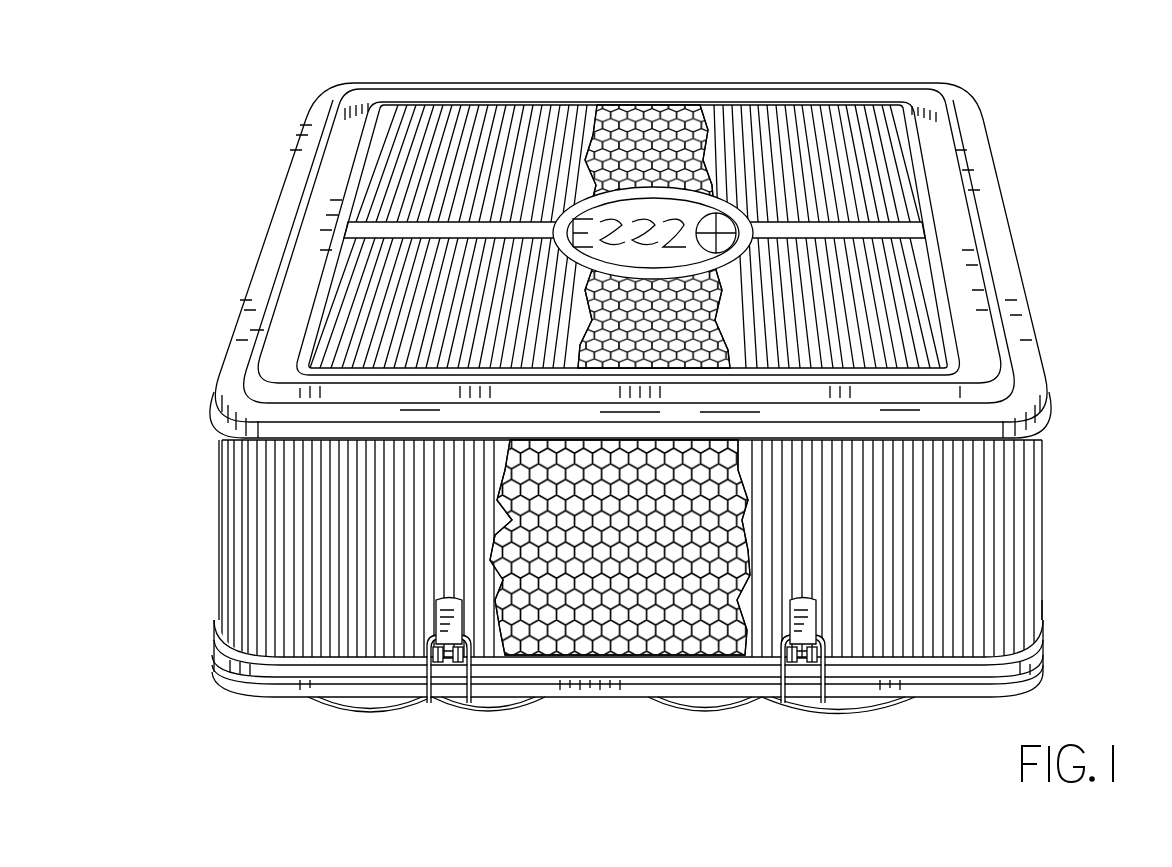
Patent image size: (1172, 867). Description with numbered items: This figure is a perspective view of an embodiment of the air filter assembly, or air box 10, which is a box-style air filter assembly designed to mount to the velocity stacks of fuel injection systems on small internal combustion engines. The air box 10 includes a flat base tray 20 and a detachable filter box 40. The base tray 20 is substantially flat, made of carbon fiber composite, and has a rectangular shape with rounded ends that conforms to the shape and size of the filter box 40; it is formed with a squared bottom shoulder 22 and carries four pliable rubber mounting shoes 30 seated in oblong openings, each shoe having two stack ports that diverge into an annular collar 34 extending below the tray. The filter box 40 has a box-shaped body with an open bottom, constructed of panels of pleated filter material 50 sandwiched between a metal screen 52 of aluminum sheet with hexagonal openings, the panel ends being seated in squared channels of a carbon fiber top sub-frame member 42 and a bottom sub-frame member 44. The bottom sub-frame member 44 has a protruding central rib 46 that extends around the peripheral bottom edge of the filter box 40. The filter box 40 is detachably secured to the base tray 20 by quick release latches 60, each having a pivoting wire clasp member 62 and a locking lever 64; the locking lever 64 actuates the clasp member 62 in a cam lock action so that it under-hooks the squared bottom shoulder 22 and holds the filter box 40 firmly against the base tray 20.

The air box 10 is at (1020, 99).
The base tray 20 is at (243, 700).
The squared bottom shoulder 22 is at (660, 700).
The mounting shoe 30 is at (350, 714).
The annular collar 34 is at (378, 707).
The filter box 40 is at (488, 80).
The top sub-frame member 42 is at (778, 95).
The bottom sub-frame member 44 is at (1044, 652).
The central rib 46 is at (653, 233).
The pleated filter material 50 is at (740, 160).
The metal screen 52 is at (640, 140).
The quick release latch 60 is at (448, 597).
The wire clasp member 62 is at (423, 672).
The locking lever 64 is at (475, 703).